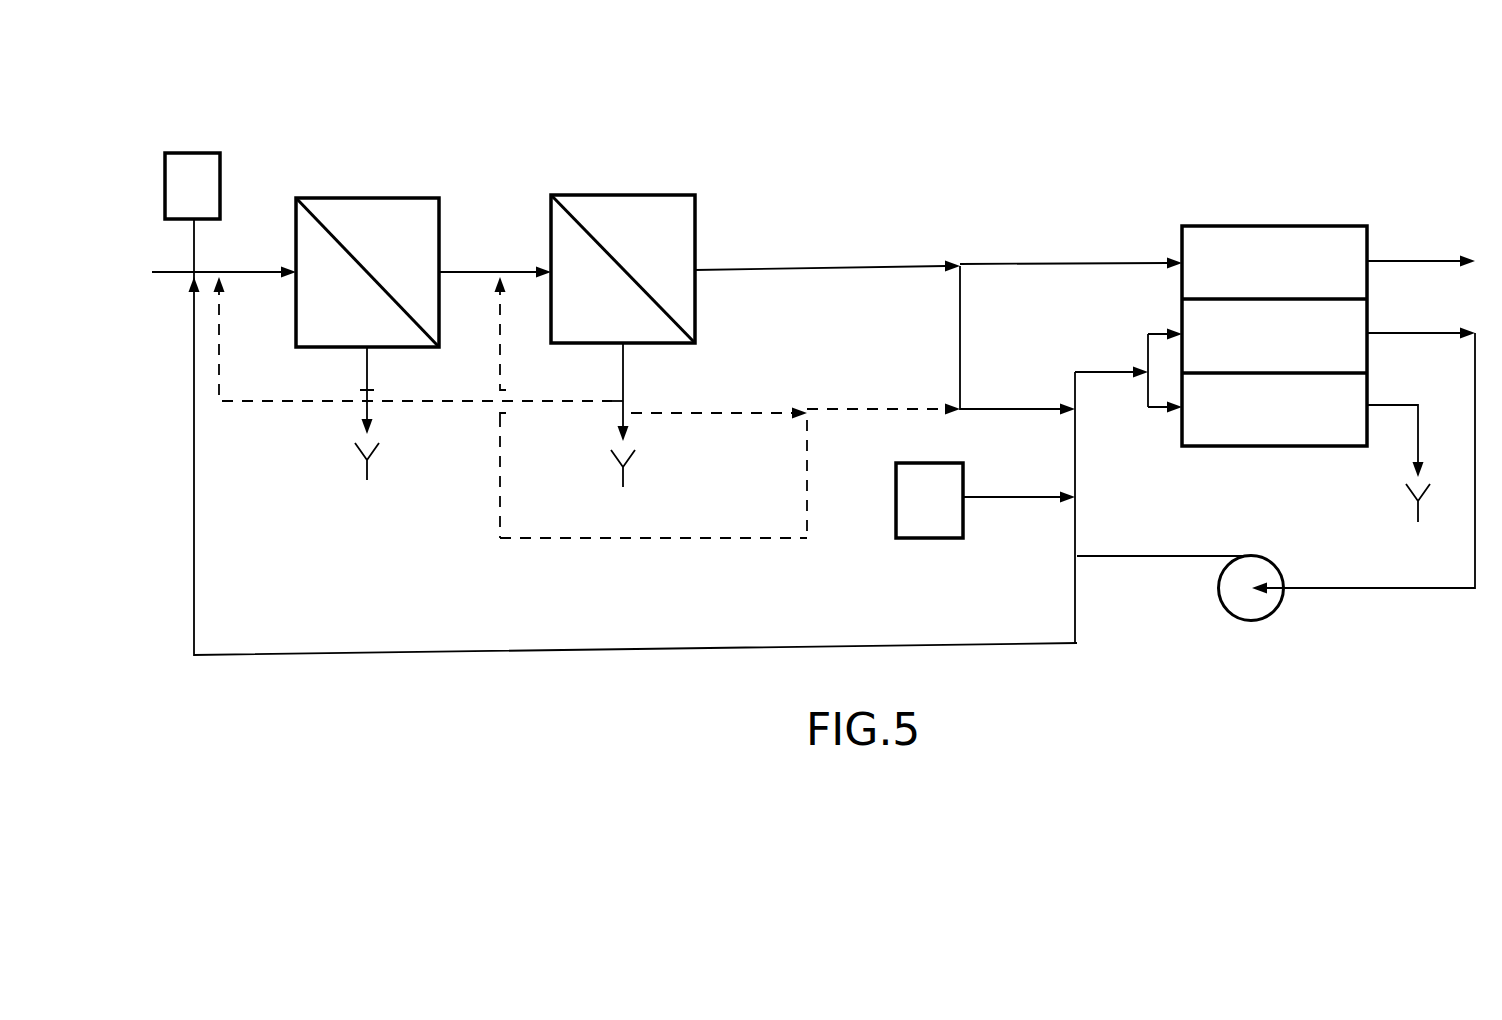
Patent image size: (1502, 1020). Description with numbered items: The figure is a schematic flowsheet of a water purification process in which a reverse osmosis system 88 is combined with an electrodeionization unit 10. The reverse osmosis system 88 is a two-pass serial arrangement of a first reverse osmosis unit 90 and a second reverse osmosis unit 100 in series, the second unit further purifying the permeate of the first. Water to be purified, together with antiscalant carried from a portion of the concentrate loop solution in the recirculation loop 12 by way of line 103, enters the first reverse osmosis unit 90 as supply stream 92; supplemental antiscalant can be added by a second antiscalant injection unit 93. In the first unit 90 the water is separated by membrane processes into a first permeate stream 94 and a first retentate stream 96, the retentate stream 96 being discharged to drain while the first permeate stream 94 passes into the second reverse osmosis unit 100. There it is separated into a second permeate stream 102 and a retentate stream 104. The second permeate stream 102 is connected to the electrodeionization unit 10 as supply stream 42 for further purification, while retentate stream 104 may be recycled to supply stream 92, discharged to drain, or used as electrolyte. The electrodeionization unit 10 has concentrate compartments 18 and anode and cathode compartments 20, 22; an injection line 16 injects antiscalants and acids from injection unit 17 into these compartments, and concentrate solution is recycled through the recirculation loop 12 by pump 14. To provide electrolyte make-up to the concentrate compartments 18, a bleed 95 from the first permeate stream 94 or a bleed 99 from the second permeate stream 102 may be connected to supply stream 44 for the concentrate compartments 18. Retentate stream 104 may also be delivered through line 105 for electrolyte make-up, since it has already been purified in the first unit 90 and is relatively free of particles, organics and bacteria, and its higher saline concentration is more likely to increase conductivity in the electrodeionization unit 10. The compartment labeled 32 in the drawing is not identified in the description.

The reverse osmosis system 88 is at (509, 142).
The second antiscalant injection unit 93 is at (220, 170).
The supply stream 92 is at (228, 272).
The reverse osmosis unit 90 is at (366, 197).
The first retentate stream 96 is at (368, 410).
The first permeate stream 94 is at (500, 270).
The second reverse osmosis unit 100 is at (608, 195).
The retentate stream 104 is at (623, 388).
The second permeate stream 102 is at (764, 267).
The line 105 is at (754, 416).
The bleed 95 is at (680, 541).
The bleed 99 is at (960, 353).
The supply stream 42 is at (1055, 262).
The supply stream 44 is at (1145, 352).
The injection unit 17 is at (925, 539).
The injection line 16 is at (995, 498).
The line 103 is at (195, 595).
The electrodeionization unit 10 is at (1291, 195).
The dispensing section D 32 is at (1363, 261).
The concentrate compartments 18 is at (1300, 336).
The anode compartment 20 is at (1307, 397).
The cathode compartment 22 is at (1370, 463).
The recirculation loop 12 is at (1442, 589).
The pump 14 is at (1256, 621).